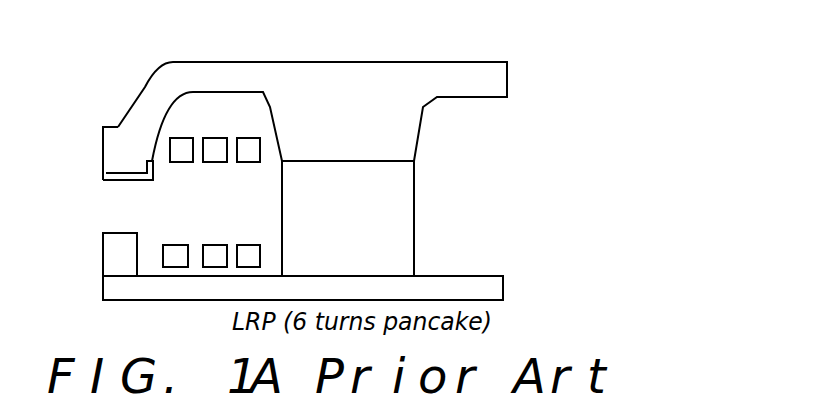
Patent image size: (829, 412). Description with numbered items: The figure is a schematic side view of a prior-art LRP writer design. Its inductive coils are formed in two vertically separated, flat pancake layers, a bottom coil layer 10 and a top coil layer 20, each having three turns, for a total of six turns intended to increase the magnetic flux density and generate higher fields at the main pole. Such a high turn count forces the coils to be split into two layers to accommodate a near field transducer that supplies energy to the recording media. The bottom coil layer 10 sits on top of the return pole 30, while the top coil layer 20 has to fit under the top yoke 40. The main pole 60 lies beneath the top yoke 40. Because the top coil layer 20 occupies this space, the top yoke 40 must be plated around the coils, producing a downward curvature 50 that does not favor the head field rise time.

The bottom coil layer 10 is at (215, 255).
The top coil layer 20 is at (180, 152).
The return pole 30 is at (117, 287).
The top yoke 40 is at (352, 78).
The downward curvature 50 is at (136, 100).
The main pole 60 is at (128, 180).